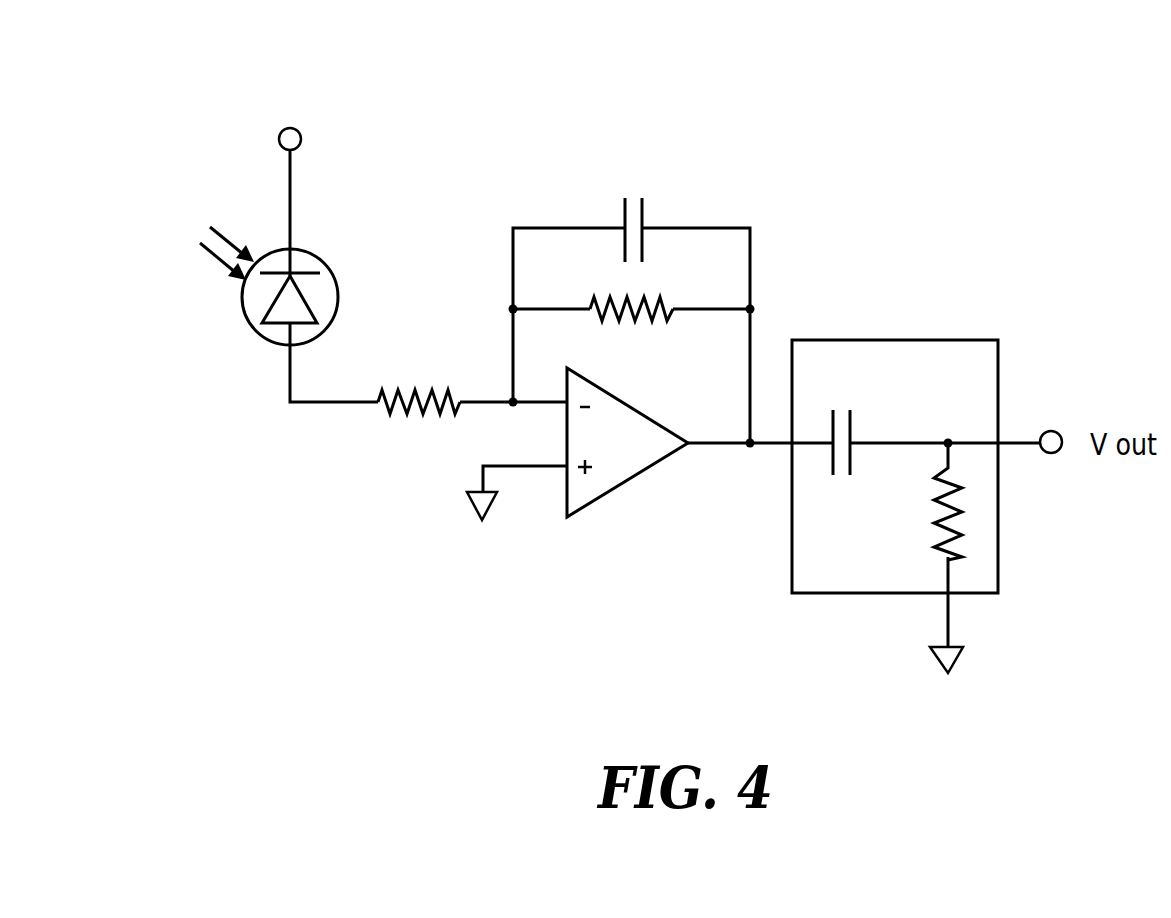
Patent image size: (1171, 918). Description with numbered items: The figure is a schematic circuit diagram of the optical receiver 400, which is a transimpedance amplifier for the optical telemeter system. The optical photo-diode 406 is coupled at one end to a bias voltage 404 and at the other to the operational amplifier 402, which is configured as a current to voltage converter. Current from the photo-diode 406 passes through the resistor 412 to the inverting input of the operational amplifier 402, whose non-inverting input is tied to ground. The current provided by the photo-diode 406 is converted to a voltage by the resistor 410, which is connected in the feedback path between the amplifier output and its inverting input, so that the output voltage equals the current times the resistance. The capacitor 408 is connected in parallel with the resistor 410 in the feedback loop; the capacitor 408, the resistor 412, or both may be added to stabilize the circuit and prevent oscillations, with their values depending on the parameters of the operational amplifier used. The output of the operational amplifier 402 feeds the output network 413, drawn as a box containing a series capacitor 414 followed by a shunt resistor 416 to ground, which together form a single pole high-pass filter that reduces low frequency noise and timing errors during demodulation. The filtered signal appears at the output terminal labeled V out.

The optical receiver 400 is at (826, 130).
The operational amplifier 402 is at (625, 483).
The bias voltage 404 is at (291, 127).
The optical photo-diode 406 is at (248, 325).
The capacitor 408 is at (632, 195).
The resistor 410 is at (650, 317).
The resistor 412 is at (390, 414).
The output network 413 is at (917, 340).
The coupling capacitor 414 is at (840, 408).
The load resistor 416 is at (957, 502).